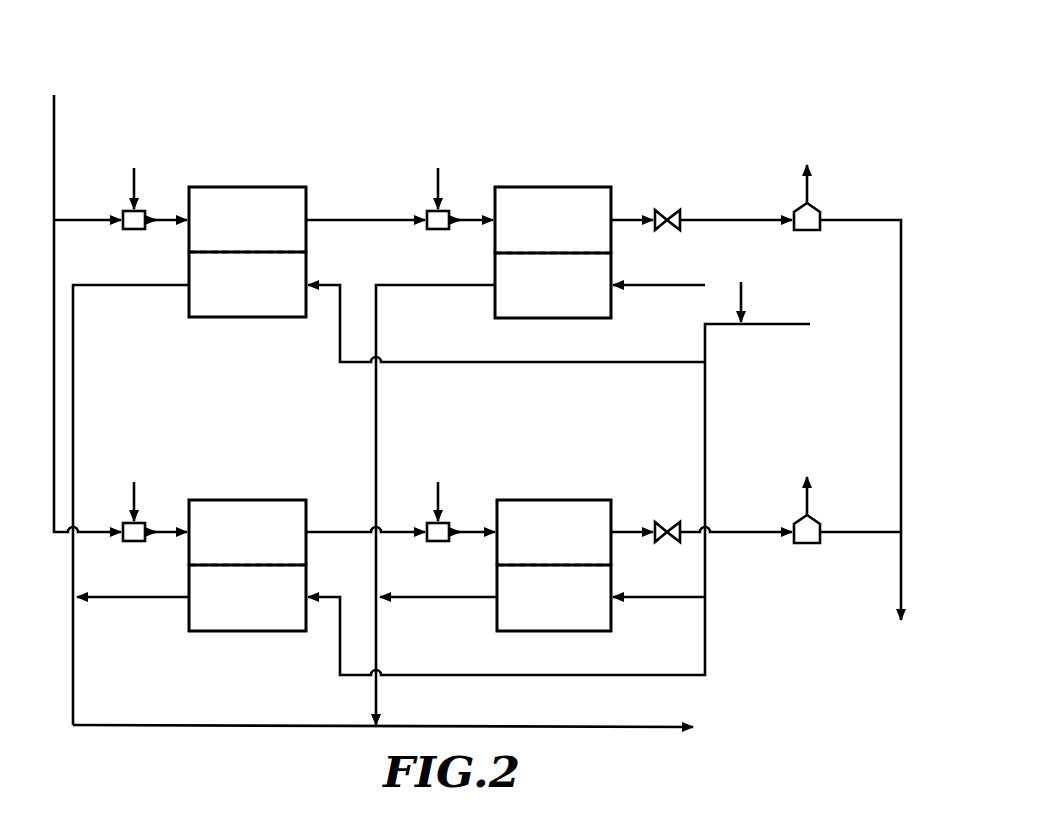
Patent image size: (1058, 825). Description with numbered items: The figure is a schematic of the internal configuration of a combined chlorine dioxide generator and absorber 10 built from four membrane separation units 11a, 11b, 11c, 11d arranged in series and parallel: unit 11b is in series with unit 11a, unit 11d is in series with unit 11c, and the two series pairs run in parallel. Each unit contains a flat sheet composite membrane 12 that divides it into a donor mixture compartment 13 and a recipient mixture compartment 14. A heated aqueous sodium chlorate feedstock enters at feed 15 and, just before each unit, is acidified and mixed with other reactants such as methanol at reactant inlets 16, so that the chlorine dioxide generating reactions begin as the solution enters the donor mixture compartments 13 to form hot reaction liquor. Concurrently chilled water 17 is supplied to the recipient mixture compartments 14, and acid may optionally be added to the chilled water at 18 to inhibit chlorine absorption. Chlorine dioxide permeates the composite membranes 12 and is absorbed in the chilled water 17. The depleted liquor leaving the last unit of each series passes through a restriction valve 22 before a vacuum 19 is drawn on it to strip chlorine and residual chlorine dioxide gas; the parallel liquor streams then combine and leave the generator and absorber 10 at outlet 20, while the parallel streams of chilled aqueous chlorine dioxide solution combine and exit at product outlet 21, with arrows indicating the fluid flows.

The combined chlorine dioxide generator and absorber 10 is at (728, 108).
The membrane separation unit 11a is at (238, 187).
The membrane separation unit 11b is at (544, 187).
The membrane separation unit 11c is at (238, 500).
The membrane separation unit 11d is at (545, 500).
The composite membrane 12 is at (297, 251).
The donor mixture compartment 13 is at (270, 193).
The recipient mixture compartment 14 is at (272, 314).
The feed 15 is at (54, 122).
The reactant inlet 16 is at (134, 190).
The chilled water 17 is at (768, 326).
The acid introduction point 18 is at (741, 308).
The vacuum 19 is at (807, 195).
The outlet 20 is at (901, 570).
The product outlet 21 is at (640, 727).
The restriction valve 22 is at (667, 210).